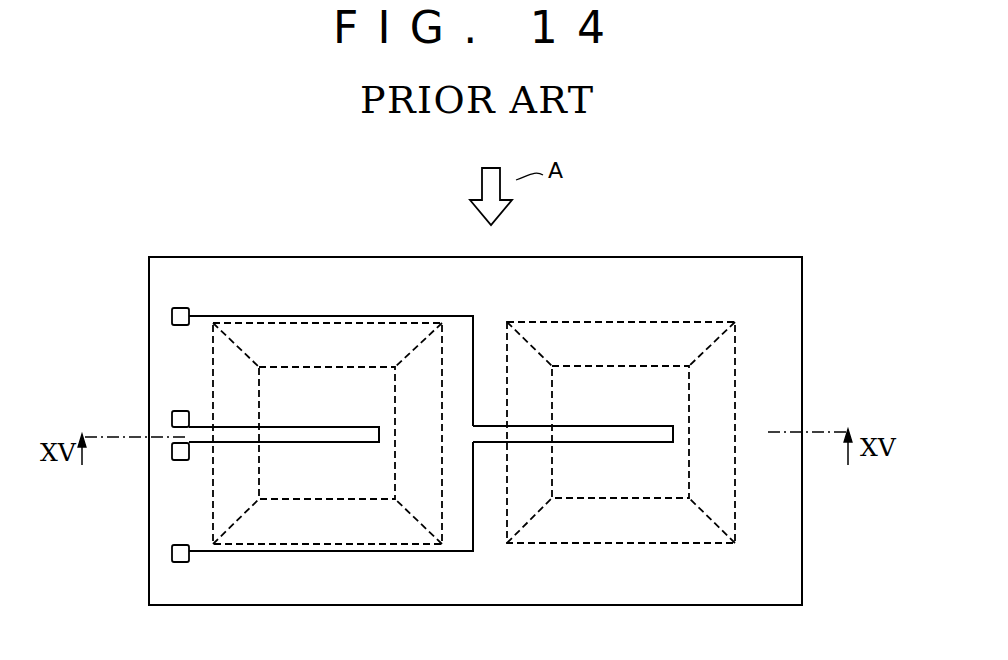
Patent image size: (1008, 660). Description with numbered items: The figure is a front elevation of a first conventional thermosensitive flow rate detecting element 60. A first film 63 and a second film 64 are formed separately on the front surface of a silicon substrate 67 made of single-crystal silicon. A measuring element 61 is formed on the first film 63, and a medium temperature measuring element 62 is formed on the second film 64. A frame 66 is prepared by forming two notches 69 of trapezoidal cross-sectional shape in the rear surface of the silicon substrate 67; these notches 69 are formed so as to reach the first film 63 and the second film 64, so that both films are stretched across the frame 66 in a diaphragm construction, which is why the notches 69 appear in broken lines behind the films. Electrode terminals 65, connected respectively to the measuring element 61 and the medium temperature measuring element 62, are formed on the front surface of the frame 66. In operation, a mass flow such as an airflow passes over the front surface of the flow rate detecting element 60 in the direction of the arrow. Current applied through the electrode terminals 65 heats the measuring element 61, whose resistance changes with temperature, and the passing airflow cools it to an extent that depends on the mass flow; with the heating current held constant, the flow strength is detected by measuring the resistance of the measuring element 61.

The first thermosensitive flow rate detecting element 60 is at (237, 216).
The measuring element 61 is at (375, 426).
The medium temperature measuring element 62 is at (663, 425).
The first film 63 is at (341, 378).
The second film 64 is at (625, 378).
The electrode terminals 65 is at (175, 326).
The frame 66 is at (793, 283).
The silicon substrate 67 is at (803, 560).
The notches 69 is at (393, 373).